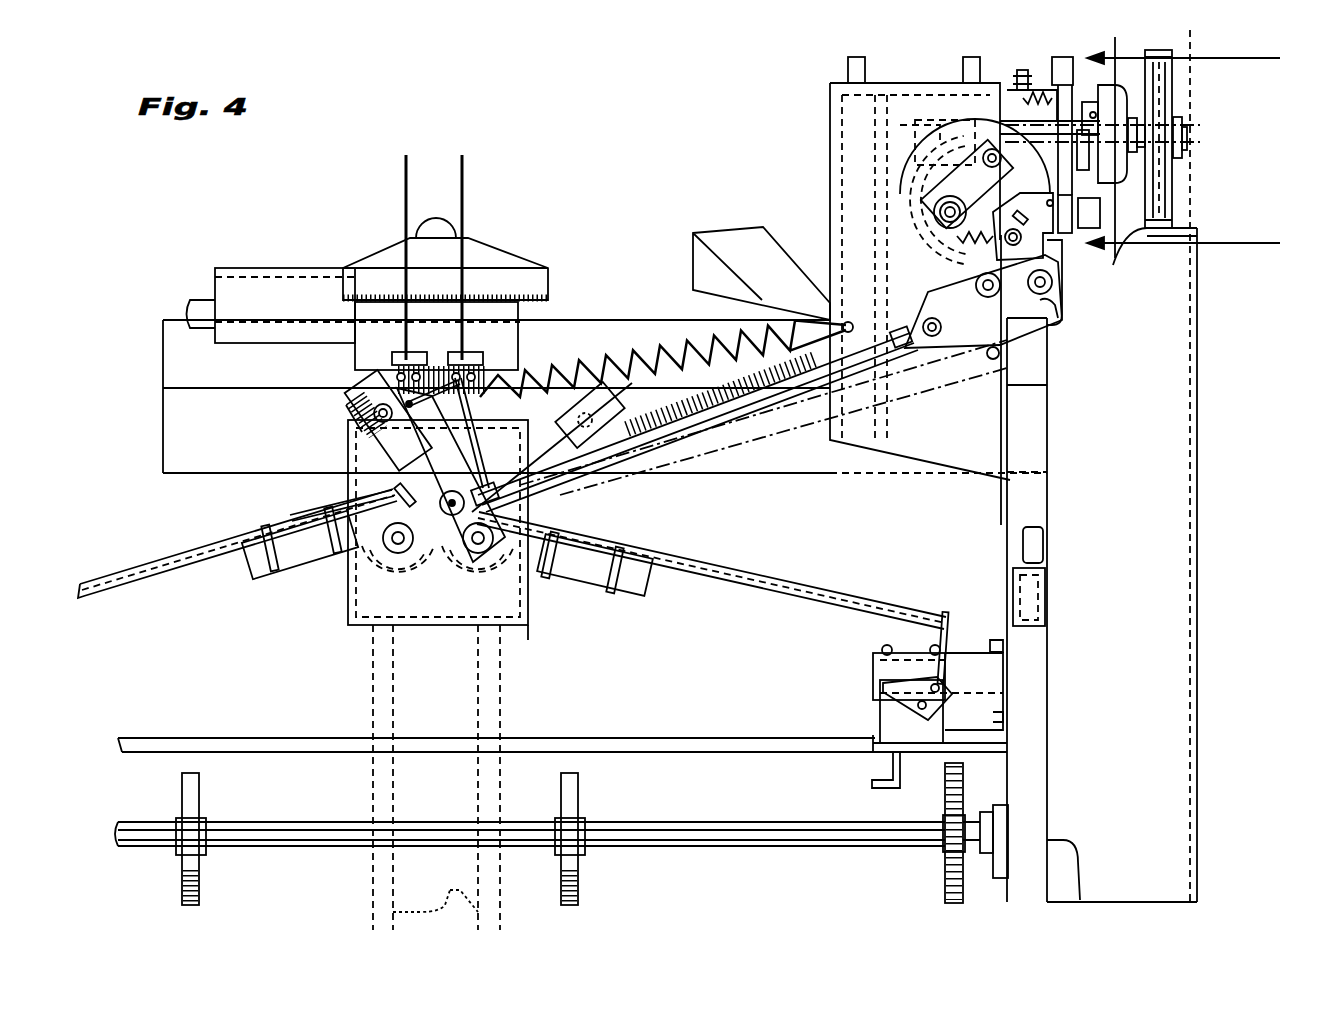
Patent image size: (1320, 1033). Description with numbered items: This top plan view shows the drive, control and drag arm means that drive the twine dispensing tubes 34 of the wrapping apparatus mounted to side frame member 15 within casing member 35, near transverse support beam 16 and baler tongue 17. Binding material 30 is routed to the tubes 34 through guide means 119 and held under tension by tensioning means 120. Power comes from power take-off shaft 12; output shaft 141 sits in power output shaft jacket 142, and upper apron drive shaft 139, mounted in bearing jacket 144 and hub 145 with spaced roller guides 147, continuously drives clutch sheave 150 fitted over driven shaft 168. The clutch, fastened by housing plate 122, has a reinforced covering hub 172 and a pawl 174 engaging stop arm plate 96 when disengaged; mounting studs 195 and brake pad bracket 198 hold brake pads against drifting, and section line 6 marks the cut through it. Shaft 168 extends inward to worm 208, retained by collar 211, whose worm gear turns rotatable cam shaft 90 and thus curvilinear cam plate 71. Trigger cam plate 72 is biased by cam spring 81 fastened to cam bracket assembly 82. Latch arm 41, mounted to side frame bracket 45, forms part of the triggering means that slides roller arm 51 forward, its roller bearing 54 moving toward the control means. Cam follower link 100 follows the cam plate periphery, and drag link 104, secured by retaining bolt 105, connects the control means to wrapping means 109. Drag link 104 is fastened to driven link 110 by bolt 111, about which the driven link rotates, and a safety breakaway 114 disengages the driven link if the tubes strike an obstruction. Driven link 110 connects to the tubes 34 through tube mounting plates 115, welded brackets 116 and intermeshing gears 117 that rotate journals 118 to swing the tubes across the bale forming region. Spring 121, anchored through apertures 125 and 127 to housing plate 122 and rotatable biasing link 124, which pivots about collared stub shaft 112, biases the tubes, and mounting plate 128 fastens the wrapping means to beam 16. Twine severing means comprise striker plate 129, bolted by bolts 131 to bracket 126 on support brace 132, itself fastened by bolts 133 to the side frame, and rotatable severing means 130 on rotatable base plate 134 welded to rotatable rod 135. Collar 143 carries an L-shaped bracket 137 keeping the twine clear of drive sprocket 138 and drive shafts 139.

The section line 6- 6 is at (1183, 149).
The power take-off shaft 12 is at (436, 218).
The side frame member 15 is at (1080, 900).
The transverse support beam 16 is at (163, 410).
The baler tongue 17 is at (693, 268).
The binding material 30 is at (406, 185).
The twine dispensing tubes 34 is at (162, 562).
The casing member 35 is at (1197, 505).
The latch arm 41 is at (1020, 545).
The side frame bracket 45 is at (1047, 585).
The roller arm 51 is at (1058, 292).
The roller bearing 54 is at (1062, 314).
The curvilinear cam plate 71 is at (935, 228).
The trigger cam plate 72 is at (1047, 200).
The cam spring 81 is at (968, 246).
The cam bracket assembly 82 is at (983, 160).
The rotatable cam shaft 90 is at (932, 210).
The stop arm plate 96 is at (1165, 228).
The cam follower link 100 is at (975, 283).
The drag link 104 is at (722, 422).
The retaining bolt 105 is at (935, 340).
The wrapping means 109 is at (292, 517).
The driven link 110 is at (352, 400).
The retaining bolt 111 is at (482, 504).
The collared stub shaft 112 is at (356, 462).
The safety breakaway 114 is at (349, 426).
The tube mounting plates 115 is at (268, 596).
The welded brackets 116 is at (633, 498).
The intermeshing gears 117 is at (410, 600).
The journals 118 is at (396, 546).
The guide means 119 is at (395, 490).
The tensioning means 120 is at (392, 360).
The spring 121 is at (632, 368).
The housing plate 122 is at (830, 150).
The rotatable biasing link 124 is at (440, 440).
The aperture 125 is at (855, 320).
The bracket 126 is at (958, 668).
The aperture 127 is at (455, 398).
The mounting plate 128 is at (532, 630).
The striker plate 129 is at (873, 665).
The rotatable severing means 130 is at (885, 685).
The bolts 131 is at (882, 648).
The support brace 132 is at (1002, 628).
The bolts 133 is at (1003, 648).
The rotatable base plate 134 is at (880, 715).
The rotatable rod 135 is at (722, 738).
The L-shaped bracket 137 is at (880, 782).
The drive sprocket 138 is at (945, 885).
The upper apron drive shaft 139 is at (790, 846).
The output shaft 141 is at (190, 300).
The power output shaft jacket 142 is at (322, 268).
The collar 143 is at (975, 752).
The bearing jacket 144 is at (956, 905).
The hub 145 is at (995, 885).
The roller guides 147 is at (199, 793).
The clutch sheave 150 is at (1170, 204).
The driven shaft 168 is at (1187, 136).
The reinforced covering hub 172 is at (1128, 170).
The pawl 174 is at (1130, 183).
The mounting studs 195 is at (1020, 78).
The brake pad bracket 198 is at (1060, 62).
The worm 208 is at (930, 120).
The collar 211 is at (900, 122).